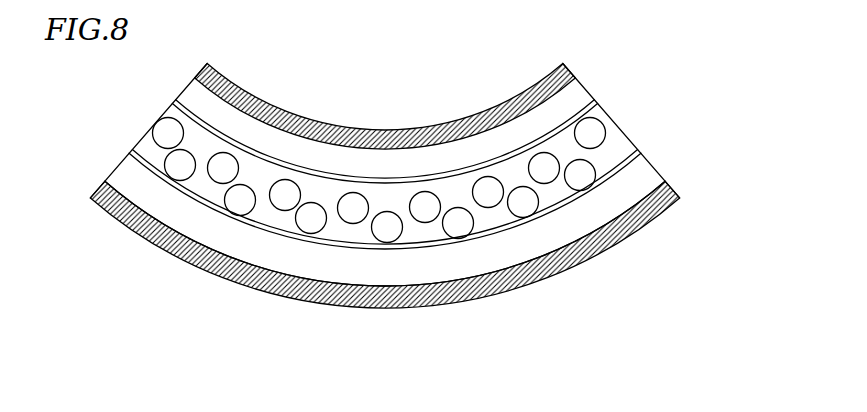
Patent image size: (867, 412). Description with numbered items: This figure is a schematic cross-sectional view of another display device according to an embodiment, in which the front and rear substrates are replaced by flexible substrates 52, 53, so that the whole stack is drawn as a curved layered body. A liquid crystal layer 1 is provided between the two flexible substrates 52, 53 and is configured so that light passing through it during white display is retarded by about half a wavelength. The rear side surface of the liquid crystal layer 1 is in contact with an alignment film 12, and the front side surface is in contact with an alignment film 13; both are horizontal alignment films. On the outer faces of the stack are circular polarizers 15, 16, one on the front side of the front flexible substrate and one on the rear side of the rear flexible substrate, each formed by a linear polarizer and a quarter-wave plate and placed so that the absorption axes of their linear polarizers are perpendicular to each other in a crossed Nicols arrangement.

The liquid crystal layer 1 is at (618, 143).
The alignment film 12 is at (643, 155).
The alignment film 13 is at (596, 98).
The circular polarizer 15 is at (560, 65).
The circular polarizer 16 is at (681, 199).
The flexible substrate 52 is at (582, 233).
The flexible substrate 53 is at (572, 88).